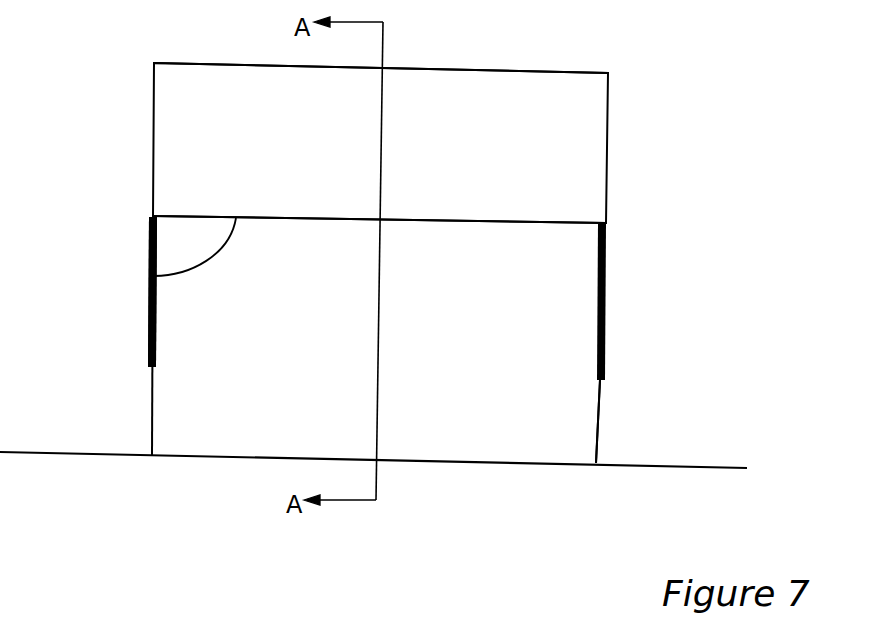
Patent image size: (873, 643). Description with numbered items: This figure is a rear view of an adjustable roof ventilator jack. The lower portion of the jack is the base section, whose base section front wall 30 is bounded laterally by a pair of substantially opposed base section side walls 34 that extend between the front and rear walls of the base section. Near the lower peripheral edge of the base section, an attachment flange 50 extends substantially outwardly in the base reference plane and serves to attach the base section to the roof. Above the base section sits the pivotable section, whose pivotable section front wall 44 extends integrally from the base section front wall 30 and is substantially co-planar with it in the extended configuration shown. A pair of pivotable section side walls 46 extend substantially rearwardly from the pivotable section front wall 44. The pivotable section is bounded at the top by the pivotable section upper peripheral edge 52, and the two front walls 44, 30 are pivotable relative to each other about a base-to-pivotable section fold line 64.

The base section front wall 30 is at (543, 365).
The base section side walls 34 is at (600, 421).
The pivotable section front wall 44 is at (558, 148).
The pivotable section side walls 46 is at (608, 290).
The attachment flange 50 is at (668, 463).
The pivotable section upper peripheral edge 52 is at (480, 68).
The base-to-pivotable section fold line 64 is at (154, 276).